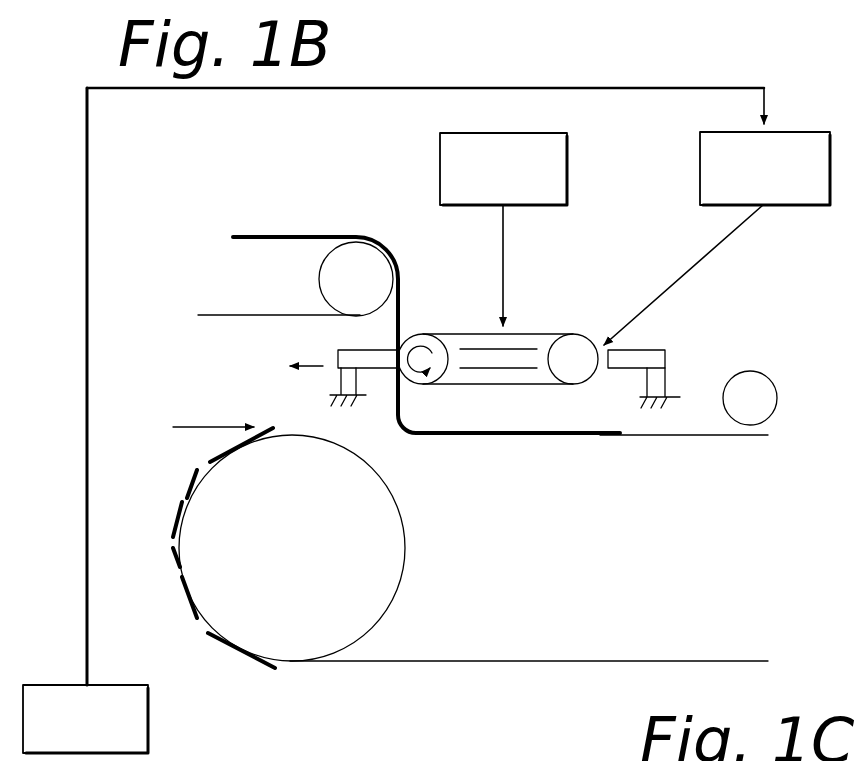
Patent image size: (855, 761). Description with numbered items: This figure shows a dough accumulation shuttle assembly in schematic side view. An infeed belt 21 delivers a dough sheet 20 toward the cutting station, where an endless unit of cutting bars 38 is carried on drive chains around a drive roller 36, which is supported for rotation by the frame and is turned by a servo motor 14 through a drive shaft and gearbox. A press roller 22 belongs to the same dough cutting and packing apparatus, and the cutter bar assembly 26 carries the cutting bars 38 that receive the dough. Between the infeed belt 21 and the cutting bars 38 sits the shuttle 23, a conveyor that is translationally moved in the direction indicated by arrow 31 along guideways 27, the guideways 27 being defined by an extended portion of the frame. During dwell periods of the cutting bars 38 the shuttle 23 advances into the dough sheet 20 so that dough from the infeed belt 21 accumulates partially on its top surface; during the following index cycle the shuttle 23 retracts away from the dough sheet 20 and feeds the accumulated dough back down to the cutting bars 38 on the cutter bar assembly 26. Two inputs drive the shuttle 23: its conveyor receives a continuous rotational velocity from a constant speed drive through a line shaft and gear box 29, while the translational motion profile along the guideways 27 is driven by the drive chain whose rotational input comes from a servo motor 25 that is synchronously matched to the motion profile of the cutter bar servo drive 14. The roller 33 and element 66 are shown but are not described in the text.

The servo motor 14 is at (85, 719).
The dough sheet 20 is at (270, 237).
The infeed belt 21 is at (227, 316).
The press roller 22 is at (688, 403).
The shuttle 23 is at (594, 330).
The servo motor 25 is at (503, 229).
The cutter bar assembly 26 is at (448, 668).
The guideways 27 is at (655, 350).
The gear box 29 is at (717, 238).
The arrow 31 is at (315, 364).
The roller 33 is at (418, 344).
The drive roller 36 is at (292, 548).
The cutting bars 38 is at (182, 500).
The blade 66 is at (173, 427).